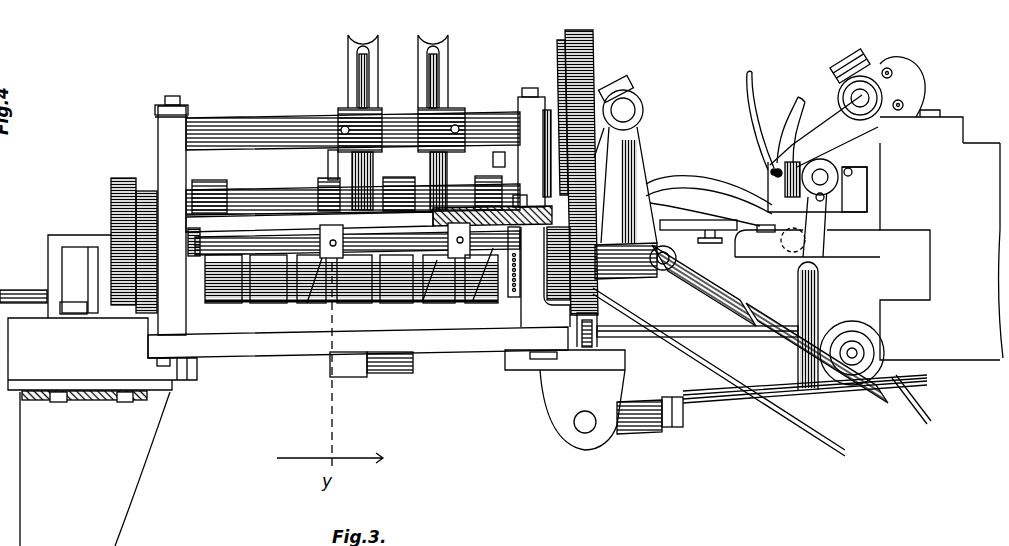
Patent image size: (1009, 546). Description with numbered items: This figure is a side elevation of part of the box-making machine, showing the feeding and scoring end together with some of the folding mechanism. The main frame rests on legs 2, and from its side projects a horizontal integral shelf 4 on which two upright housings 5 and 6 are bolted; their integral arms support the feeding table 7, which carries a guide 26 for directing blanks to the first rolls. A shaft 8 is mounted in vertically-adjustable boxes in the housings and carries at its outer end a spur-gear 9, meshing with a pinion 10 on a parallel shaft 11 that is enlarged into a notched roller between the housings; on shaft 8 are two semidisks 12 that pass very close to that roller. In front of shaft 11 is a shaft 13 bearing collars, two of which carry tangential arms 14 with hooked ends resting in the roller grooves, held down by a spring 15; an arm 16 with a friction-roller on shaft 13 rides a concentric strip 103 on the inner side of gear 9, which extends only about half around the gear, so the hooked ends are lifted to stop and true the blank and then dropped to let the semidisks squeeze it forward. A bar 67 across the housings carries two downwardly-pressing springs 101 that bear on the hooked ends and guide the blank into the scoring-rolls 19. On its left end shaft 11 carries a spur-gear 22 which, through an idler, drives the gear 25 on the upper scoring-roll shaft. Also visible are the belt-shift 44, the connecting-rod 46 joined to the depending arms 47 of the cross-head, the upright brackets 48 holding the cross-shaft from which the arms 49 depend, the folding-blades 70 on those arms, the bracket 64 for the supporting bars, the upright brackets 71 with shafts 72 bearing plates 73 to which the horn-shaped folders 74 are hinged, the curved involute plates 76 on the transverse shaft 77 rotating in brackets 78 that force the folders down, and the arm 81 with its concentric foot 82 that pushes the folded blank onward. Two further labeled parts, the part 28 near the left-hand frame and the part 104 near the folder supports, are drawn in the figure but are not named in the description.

The legs 2 is at (102, 432).
The horizontal integral shelf 4 is at (358, 352).
The upright housing 5 is at (171, 215).
The upright housing 6 is at (534, 147).
The shelf or table 7 is at (300, 234).
The shaft 8 is at (227, 117).
The spur-gear 9 is at (577, 171).
The pinion 10 is at (598, 287).
The shaft 11 is at (268, 310).
The semidisks 12 is at (409, 72).
The shaft 13 is at (486, 303).
The tangential arms 14 is at (395, 303).
The spring 15 is at (515, 279).
The arm 16 is at (545, 237).
The scoring-rolls 19 is at (226, 183).
The spur-gear 22 is at (128, 310).
The gear 25 is at (110, 194).
The guide 26 is at (492, 199).
The bracket 28 is at (80, 266).
The belt-shift 44 is at (791, 334).
The connecting-rod 46 is at (676, 430).
The depending arms 47 is at (597, 450).
The upright brackets 48 is at (638, 157).
The arms 49 is at (632, 110).
The upright horizontal bracket 64 is at (49, 280).
The bar 67 is at (209, 185).
The folding-blades 70 is at (668, 205).
The upright brackets 71 is at (823, 224).
The shafts 72 is at (824, 173).
The plates 73 is at (854, 189).
The folders 74 is at (709, 192).
The curved plates 76 is at (906, 66).
The transverse shaft 77 is at (866, 97).
The brackets 78 is at (957, 128).
The arm 81 is at (824, 131).
The concentric foot 82 is at (776, 119).
The downwardly-pressing springs 101 is at (328, 168).
The concentric strip 103 is at (557, 47).
The plate 104 is at (698, 228).